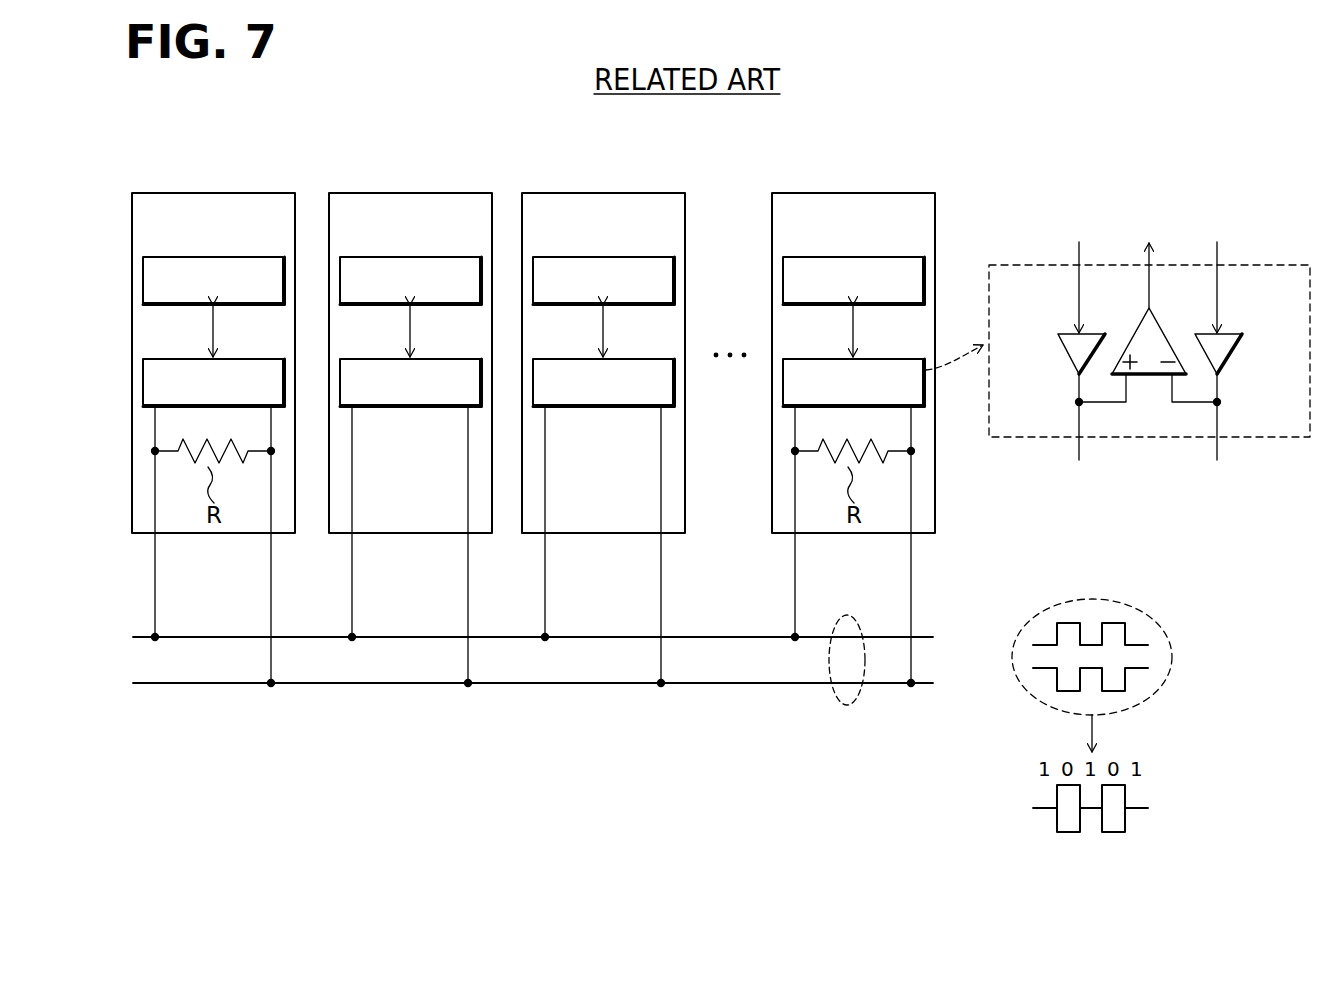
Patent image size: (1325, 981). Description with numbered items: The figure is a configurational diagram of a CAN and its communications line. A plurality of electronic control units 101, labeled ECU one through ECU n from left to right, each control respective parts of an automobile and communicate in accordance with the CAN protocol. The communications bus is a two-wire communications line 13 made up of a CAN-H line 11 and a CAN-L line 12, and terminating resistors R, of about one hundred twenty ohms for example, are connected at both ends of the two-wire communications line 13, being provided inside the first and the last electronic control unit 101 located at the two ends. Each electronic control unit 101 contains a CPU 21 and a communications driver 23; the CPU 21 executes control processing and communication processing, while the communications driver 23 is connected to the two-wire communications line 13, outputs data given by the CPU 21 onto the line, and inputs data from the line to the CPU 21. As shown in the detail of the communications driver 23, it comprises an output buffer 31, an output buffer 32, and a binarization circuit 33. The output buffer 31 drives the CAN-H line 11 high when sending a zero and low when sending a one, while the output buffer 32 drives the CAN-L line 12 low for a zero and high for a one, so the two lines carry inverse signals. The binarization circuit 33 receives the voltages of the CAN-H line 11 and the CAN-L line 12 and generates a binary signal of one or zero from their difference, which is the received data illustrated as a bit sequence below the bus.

The electronic control unit 101 is at (238, 193).
The CPU 21 is at (238, 257).
The communications driver 23 is at (238, 359).
The CAN-H line 11 is at (892, 636).
The CAN-L line 12 is at (888, 686).
The two-wire communications line 13 is at (843, 705).
The output buffer 31 is at (1072, 332).
The output buffer 32 is at (1230, 332).
The binarization circuit 33 is at (1142, 330).